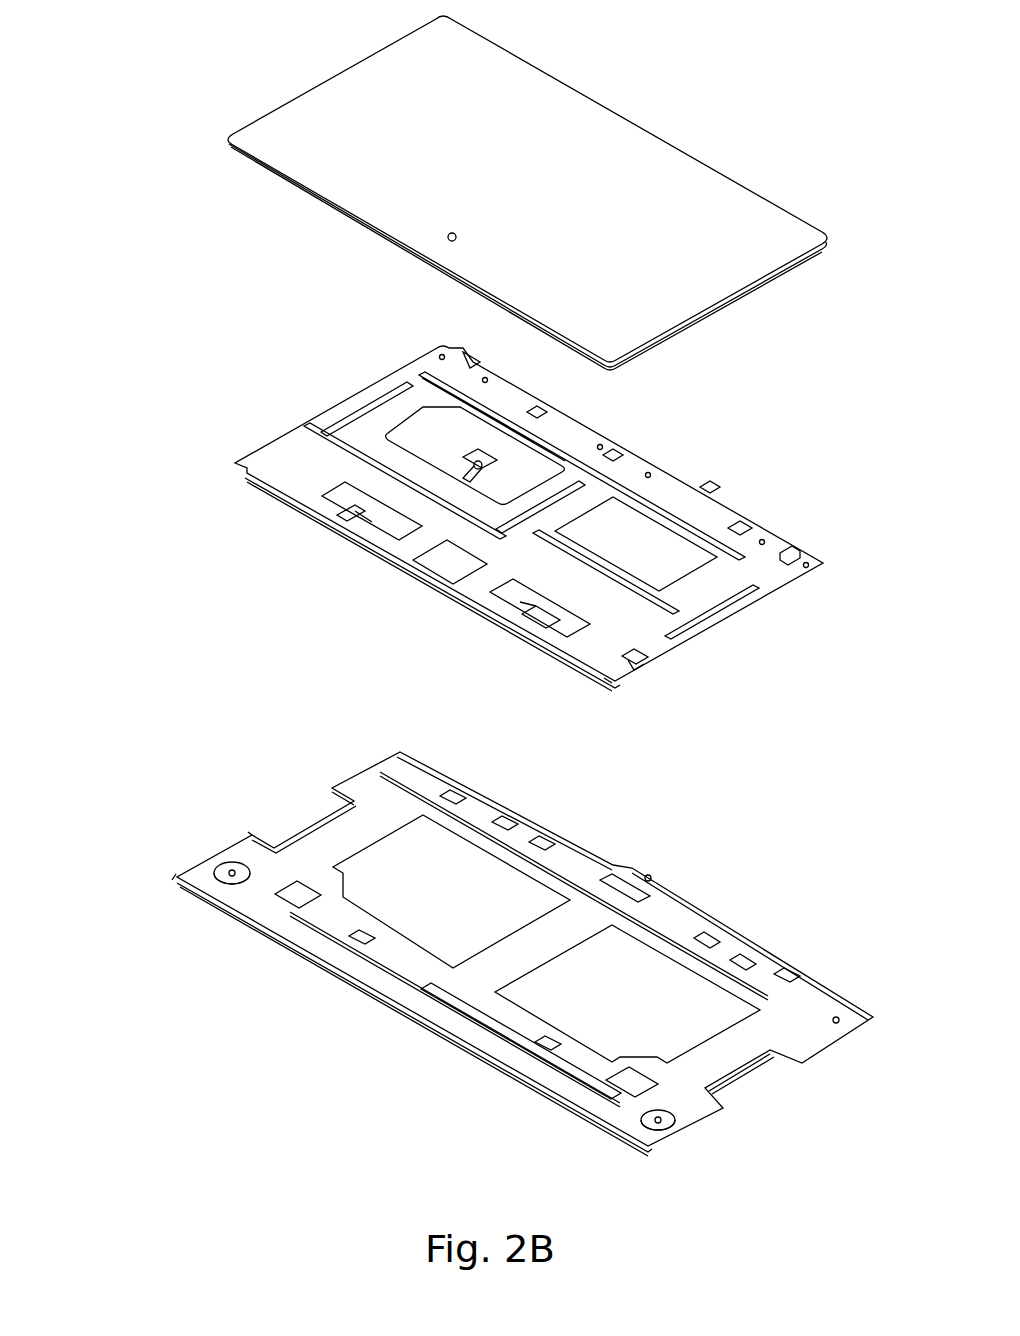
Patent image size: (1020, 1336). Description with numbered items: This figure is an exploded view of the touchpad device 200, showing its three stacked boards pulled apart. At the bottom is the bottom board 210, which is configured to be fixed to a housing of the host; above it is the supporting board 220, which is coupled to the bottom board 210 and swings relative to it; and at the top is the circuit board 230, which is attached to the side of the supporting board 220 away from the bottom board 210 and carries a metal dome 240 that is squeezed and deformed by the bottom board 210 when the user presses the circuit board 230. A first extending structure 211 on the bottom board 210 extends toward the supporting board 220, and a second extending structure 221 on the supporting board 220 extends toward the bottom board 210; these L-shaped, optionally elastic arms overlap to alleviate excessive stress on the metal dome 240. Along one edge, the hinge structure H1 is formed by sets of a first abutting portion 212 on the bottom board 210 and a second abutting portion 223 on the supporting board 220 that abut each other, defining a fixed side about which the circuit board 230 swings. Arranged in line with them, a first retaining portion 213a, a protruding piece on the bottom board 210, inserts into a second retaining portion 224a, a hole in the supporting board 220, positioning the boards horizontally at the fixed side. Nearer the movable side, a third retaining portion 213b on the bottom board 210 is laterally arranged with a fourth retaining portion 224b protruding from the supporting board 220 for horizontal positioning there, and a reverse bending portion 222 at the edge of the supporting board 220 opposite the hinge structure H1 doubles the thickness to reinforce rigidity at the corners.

The touchpad device 200 is at (140, 23).
The bottom board 210 is at (728, 1082).
The first extending structure 211 is at (545, 1045).
The first abutting portion 212 is at (787, 975).
The first retaining portion 213a is at (741, 955).
The third retaining portion 213b is at (680, 1122).
The supporting board 220 is at (742, 622).
The second extending structure 221 is at (525, 612).
The reverse bending portion 222 is at (607, 680).
The second abutting portion 223 is at (790, 548).
The second retaining portion 224a is at (737, 518).
The fourth retaining portion 224b is at (627, 662).
The circuit board 230 is at (725, 302).
The metal dome 240 is at (449, 240).
The hinge structure H1 is at (112, 600).